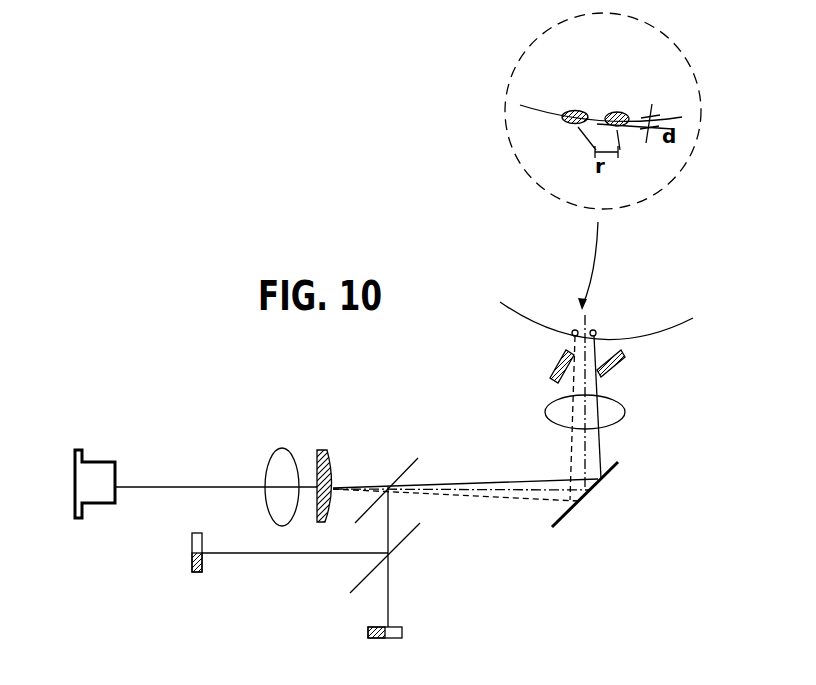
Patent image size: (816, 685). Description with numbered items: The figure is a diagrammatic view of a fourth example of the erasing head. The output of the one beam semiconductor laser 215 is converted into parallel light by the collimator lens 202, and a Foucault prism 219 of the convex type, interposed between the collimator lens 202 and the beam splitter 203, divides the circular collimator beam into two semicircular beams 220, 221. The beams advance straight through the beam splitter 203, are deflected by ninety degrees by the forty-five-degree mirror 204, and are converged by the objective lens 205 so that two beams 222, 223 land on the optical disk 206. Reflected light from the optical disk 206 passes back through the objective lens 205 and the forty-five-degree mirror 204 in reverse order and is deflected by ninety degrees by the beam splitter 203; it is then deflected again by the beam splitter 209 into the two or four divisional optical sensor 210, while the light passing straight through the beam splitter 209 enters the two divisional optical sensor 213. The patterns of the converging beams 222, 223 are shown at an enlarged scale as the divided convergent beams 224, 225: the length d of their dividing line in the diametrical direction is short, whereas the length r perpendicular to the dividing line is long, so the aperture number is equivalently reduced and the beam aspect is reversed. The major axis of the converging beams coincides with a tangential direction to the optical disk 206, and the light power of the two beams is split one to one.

The collimator lens 202 is at (287, 448).
The beam splitter 203 is at (405, 462).
The 45-degree mirror 204 is at (615, 468).
The objective lens 205 is at (625, 412).
The optical disk 206 is at (673, 326).
The beam splitter 209 is at (415, 532).
The two or four divisional optical sensor 210 is at (202, 572).
The two divisional optical sensor 213 is at (402, 630).
The one beam semiconductor laser 215 is at (98, 462).
The Foucault prism 219 is at (327, 460).
The semicircular beam 220 is at (622, 362).
The semicircular beam 221 is at (555, 365).
The beam converged on the optical disk 222 is at (595, 330).
The beam converged on the optical disk 223 is at (574, 330).
The divided convergent beam pattern 224 is at (618, 112).
The divided convergent beam pattern 225 is at (578, 110).